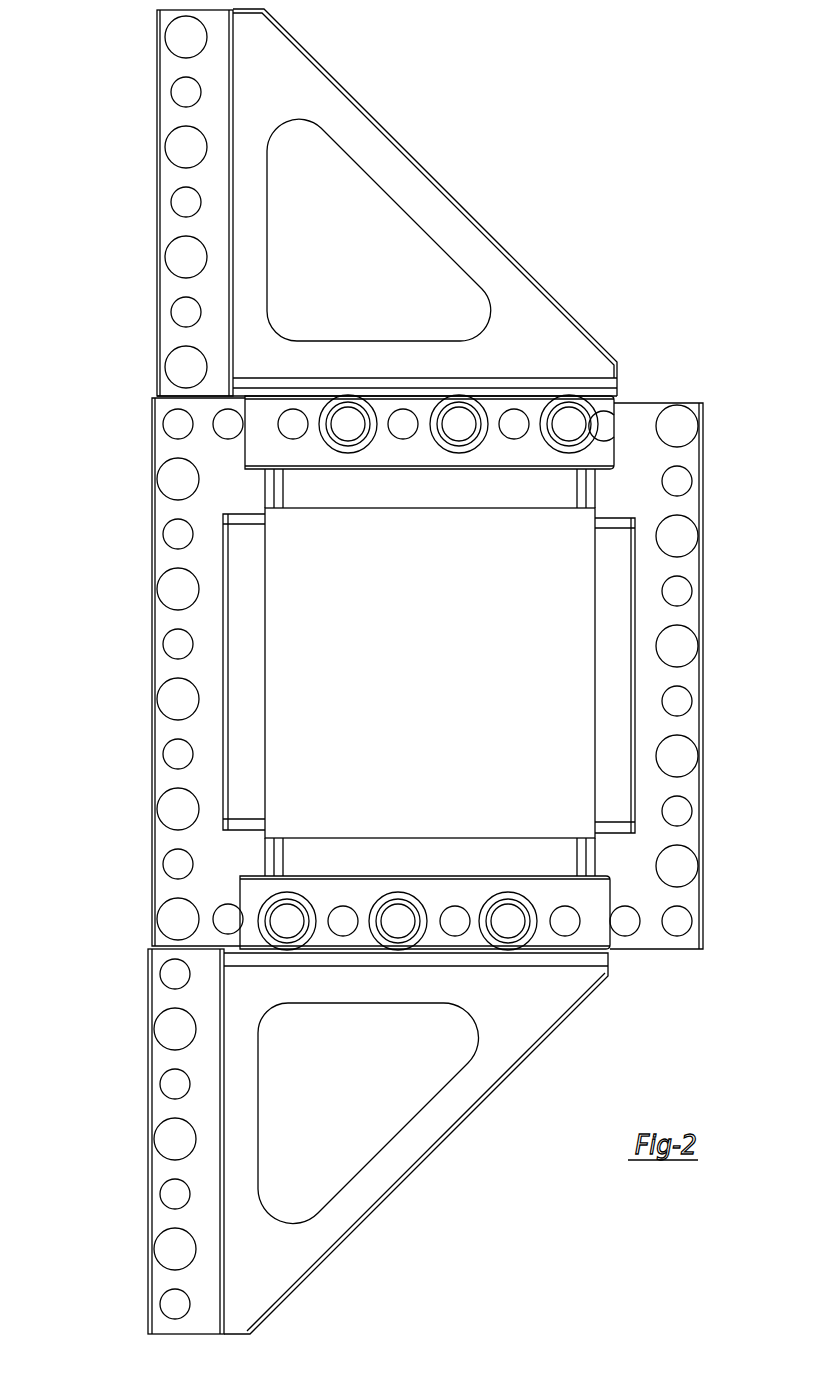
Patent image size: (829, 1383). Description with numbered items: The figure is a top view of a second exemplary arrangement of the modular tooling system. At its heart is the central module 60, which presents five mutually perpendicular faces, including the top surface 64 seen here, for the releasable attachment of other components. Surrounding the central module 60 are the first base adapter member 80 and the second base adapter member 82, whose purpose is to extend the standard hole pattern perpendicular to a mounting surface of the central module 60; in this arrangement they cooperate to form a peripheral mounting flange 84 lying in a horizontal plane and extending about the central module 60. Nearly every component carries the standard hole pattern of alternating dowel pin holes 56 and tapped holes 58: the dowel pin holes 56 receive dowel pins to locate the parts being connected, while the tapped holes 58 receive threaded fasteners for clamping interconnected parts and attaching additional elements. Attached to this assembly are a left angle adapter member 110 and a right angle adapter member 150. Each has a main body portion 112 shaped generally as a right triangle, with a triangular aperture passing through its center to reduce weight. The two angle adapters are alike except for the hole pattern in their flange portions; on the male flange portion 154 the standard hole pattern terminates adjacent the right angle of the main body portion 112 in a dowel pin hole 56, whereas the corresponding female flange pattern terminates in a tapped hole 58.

The dowel pin holes 56 is at (157, 33).
The tapped holes 58 is at (163, 304).
The central module 60 is at (567, 733).
The top surface 64 is at (559, 661).
The first base adapter member 80 is at (139, 707).
The second base adapter member 82 is at (552, 481).
The peripheral mounting flange 84 is at (144, 493).
The left angle adapter member 110 is at (407, 1149).
The main body portion 112 is at (425, 196).
The right angle adapter member 150 is at (492, 265).
The male flange portion 154 is at (170, 169).